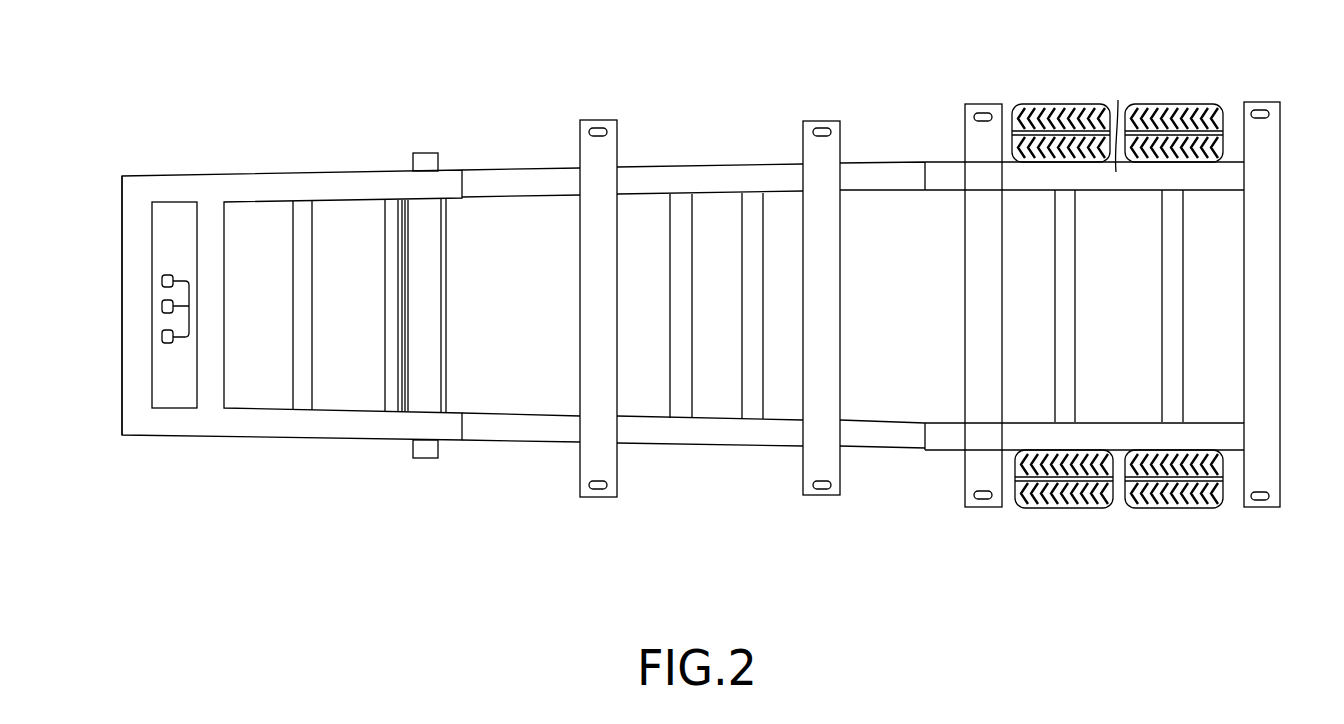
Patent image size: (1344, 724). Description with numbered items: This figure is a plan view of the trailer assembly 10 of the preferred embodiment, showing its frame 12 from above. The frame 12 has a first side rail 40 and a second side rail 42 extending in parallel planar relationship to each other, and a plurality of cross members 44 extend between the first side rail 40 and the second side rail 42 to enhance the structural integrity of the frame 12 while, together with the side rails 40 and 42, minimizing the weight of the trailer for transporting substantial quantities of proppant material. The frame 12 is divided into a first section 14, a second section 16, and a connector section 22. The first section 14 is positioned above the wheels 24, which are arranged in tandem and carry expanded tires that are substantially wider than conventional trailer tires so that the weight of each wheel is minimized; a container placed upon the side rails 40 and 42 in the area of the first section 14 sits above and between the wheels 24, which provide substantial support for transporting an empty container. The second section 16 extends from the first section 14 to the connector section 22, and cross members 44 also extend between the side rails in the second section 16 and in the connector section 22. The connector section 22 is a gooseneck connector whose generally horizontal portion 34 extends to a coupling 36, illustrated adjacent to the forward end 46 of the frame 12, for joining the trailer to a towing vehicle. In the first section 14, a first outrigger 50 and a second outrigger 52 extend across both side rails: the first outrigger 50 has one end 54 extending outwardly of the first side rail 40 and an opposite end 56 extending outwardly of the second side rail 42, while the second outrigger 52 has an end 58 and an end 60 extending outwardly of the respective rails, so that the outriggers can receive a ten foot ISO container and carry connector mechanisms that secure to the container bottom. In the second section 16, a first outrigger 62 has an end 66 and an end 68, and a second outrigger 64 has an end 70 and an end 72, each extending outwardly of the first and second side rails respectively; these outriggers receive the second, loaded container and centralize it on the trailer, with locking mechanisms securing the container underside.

The trailer assembly 10 is at (877, 70).
The frame 12 is at (243, 178).
The first section 14 is at (1118, 100).
The second section 16 is at (640, 167).
The connector section 22 is at (352, 171).
The wheels 24 is at (1075, 507).
The horizontal portion 34 is at (1165, 104).
The coupling 36 is at (176, 273).
The first side rail 40 is at (512, 170).
The second side rail 42 is at (893, 450).
The cross members 44 is at (293, 300).
The forward end 46 is at (122, 278).
The first outrigger 50 is at (1266, 138).
The second outrigger 52 is at (962, 163).
The end 54 is at (1256, 102).
The opposite end 56 is at (1262, 507).
The end 58 is at (975, 104).
The end 60 is at (985, 507).
The first outrigger 62 is at (840, 297).
The second outrigger 64 is at (580, 292).
The end 66 is at (822, 121).
The end 68 is at (822, 495).
The end 70 is at (598, 120).
The end 72 is at (598, 497).